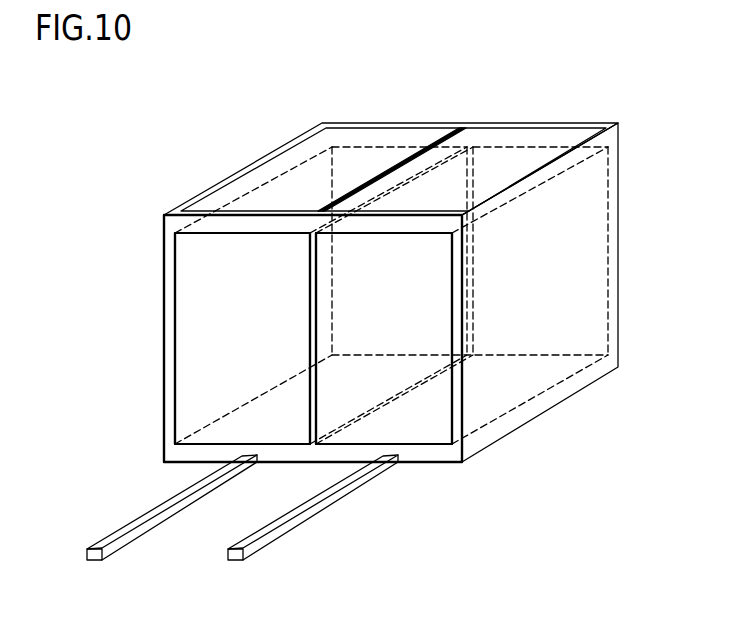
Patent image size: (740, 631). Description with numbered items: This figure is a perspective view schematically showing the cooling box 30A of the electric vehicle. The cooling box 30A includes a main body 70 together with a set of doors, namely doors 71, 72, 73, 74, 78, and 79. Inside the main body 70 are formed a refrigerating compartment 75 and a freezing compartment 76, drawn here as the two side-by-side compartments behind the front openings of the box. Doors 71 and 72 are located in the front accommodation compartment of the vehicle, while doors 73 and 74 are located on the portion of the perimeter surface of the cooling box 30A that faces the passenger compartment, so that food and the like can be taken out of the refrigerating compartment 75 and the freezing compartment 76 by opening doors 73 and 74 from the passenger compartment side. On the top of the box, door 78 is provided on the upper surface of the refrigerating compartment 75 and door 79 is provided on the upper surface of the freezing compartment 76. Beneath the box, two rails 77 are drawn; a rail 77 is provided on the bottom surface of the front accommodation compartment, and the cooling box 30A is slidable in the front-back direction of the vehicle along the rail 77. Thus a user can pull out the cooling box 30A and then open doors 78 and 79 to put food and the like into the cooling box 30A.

The cooling box 30A is at (590, 101).
The main body 70 is at (166, 325).
The door 71 is at (343, 362).
The door 72 is at (200, 284).
The door 73 is at (540, 146).
The door 74 is at (382, 148).
The refrigerating compartment 75 is at (594, 205).
The freezing compartment 76 is at (252, 190).
The rail 77 is at (96, 563).
The door 78 is at (497, 151).
The door 79 is at (340, 152).